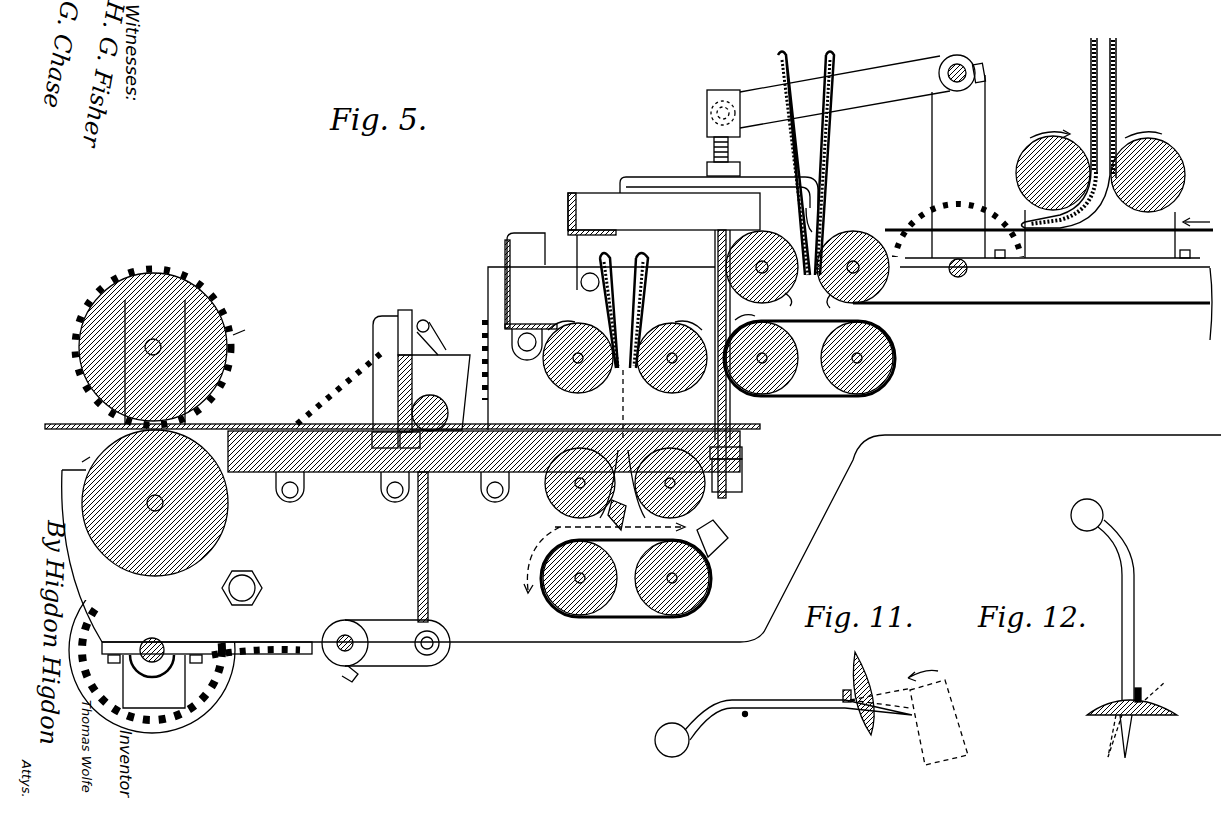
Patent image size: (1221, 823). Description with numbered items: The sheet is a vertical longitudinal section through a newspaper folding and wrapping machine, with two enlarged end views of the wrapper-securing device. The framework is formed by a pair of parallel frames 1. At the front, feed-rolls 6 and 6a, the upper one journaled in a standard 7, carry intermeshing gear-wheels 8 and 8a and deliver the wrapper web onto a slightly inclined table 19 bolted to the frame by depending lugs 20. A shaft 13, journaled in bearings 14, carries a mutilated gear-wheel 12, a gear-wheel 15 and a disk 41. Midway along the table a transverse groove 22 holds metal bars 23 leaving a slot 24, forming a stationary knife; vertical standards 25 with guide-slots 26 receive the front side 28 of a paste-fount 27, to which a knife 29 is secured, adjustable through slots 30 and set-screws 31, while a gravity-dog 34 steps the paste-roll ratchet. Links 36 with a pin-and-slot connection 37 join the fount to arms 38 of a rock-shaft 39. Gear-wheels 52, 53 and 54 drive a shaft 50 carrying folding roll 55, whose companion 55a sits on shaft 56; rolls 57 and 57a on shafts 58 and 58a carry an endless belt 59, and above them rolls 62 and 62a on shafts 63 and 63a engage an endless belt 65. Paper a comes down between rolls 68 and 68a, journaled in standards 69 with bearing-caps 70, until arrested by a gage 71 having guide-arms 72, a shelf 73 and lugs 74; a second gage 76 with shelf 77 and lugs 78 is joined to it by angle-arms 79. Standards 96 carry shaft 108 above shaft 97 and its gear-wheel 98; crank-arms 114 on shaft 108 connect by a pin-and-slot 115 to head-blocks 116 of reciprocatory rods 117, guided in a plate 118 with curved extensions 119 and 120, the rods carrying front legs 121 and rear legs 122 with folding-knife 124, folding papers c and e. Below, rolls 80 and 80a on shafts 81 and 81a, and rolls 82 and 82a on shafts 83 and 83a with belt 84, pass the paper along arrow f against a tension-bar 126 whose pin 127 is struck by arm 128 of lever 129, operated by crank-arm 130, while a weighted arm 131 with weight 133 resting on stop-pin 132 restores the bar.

In FIG. 5, the parallel frames 1 is at (641, 364).
In FIG. 5, the feed-roll 6 is at (153, 347).
In FIG. 5, the feed-roll 6a is at (155, 503).
In FIG. 5, the standard 7 is at (155, 362).
In FIG. 5, the gear-wheel 8 is at (246, 338).
In FIG. 5, the gear-wheel 8a is at (76, 451).
In FIG. 5, the mutilated gear-wheel 12 is at (430, 413).
In FIG. 5, the shaft 13 is at (154, 640).
In FIG. 5, the bearings 14 is at (155, 681).
In FIG. 5, the gear-wheel 15 is at (200, 700).
In FIG. 5, the inclined plane or table 19 is at (402, 448).
In FIG. 5, the depending lugs 20 is at (490, 512).
In FIG. 5, the transverse groove 22 is at (378, 438).
In FIG. 5, the metal bars 23 is at (408, 448).
In FIG. 5, the slot 24 is at (392, 498).
In FIG. 5, the vertical standards 25 is at (380, 316).
In FIG. 5, the vertical guide-slots 26 is at (405, 330).
In FIG. 5, the paste-fount 27 is at (441, 392).
In FIG. 5, the front side of paste-fount 28 is at (398, 365).
In FIG. 5, the knife 29 is at (398, 372).
In FIG. 5, the slots 30 is at (398, 414).
In FIG. 5, the set-screws 31 is at (398, 393).
In FIG. 5, the gravity-dog 34 is at (438, 336).
In FIG. 5, the links 36 is at (428, 548).
In FIG. 5, the pin-and-slot connection 37 is at (425, 655).
In FIG. 5, the arms 38 is at (397, 643).
In FIG. 5, the rock-shaft 39 is at (343, 652).
In FIG. 5, the disk 41 is at (200, 710).
In FIG. 5, the shaft 50 is at (579, 371).
In FIG. 5, the gear-wheel 52 is at (252, 660).
In FIG. 5, the gear-wheel 53 is at (334, 387).
In FIG. 5, the gear-wheel 54 is at (473, 348).
In FIG. 5, the paper-folding roll 55 is at (578, 357).
In FIG. 5, the paper-folding roll 55a is at (672, 357).
In FIG. 5, the shaft 56 is at (673, 371).
In FIG. 5, the roll 57 is at (762, 354).
In FIG. 5, the roll 57a is at (857, 358).
In FIG. 5, the shaft 58 is at (759, 371).
In FIG. 5, the shaft 58a is at (857, 371).
In FIG. 5, the endless belt or apron 59 is at (793, 397).
In FIG. 5, the folding roll 62 is at (762, 265).
In FIG. 5, the folding roll 62a is at (853, 265).
In FIG. 5, the shaft 63 is at (761, 278).
In FIG. 5, the shaft 63a is at (852, 278).
In FIG. 5, the endless belt or apron 65 is at (1096, 233).
In FIG. 5, the folding roll 68 is at (1053, 172).
In FIG. 5, the folding roll 68a is at (1148, 172).
In FIG. 5, the standards 69 is at (1075, 199).
In FIG. 5, the bearing-caps 70 is at (1055, 126).
In FIG. 5, the gage 71 is at (568, 198).
In FIG. 5, the longitudinal guide-arms 72 is at (664, 211).
In FIG. 5, the shelf 73 is at (585, 235).
In FIG. 5, the depending lugs 74 is at (580, 280).
In FIG. 5, the second gage 76 is at (510, 292).
In FIG. 5, the horizontal shelf 77 is at (545, 324).
In FIG. 5, the depending lugs 78 is at (526, 352).
In FIG. 5, the angle-arms 79 is at (512, 233).
In FIG. 5, the roll 80 is at (580, 483).
In FIG. 5, the roll 80a is at (670, 483).
In FIG. 5, the shaft 81 is at (577, 496).
In FIG. 5, the shaft 81a is at (670, 496).
In FIG. 5, the roll 82 is at (580, 578).
In FIG. 5, the roll 82a is at (705, 575).
In FIG. 5, the shaft 83 is at (575, 589).
In FIG. 5, the shaft 83a is at (700, 595).
In FIG. 5, the endless belt or apron 84 is at (626, 590).
In FIG. 5, the standards 96 is at (954, 140).
In FIG. 5, the shaft 97 is at (964, 272).
In FIG. 5, the gear-wheel 98 is at (920, 210).
In FIG. 5, the shaft 108 is at (960, 64).
In FIG. 5, the crank-arms 114 is at (845, 92).
In FIG. 5, the pin-and-slot connection 115 is at (707, 102).
In FIG. 5, the head-blocks 116 is at (707, 125).
In FIG. 5, the vertically-reciprocatory rods 117 is at (718, 293).
In FIG. 5, the horizontal guide-plate 118 is at (742, 452).
In FIG. 5, the curved extension 119 is at (648, 442).
In FIG. 5, the curved extension 120 is at (605, 440).
In FIG. 5, the front legs 121 is at (620, 180).
In FIG. 5, the rear legs 122 is at (818, 190).
In FIG. 5, the folding-knife 124 is at (812, 220).
In FIG. 5, the tension-bar 126 is at (622, 483).
In FIG. 11, the tension-bar 126 is at (856, 662).
In FIG. 12, the tension-bar 126 is at (1100, 705).
In FIG. 11, the pin 127 is at (850, 690).
In FIG. 12, the pin 127 is at (1171, 685).
In FIG. 5, the arm 128 is at (604, 554).
In FIG. 11, the arm 128 is at (843, 694).
In FIG. 12, the arm 128 is at (1140, 688).
In FIG. 5, the lever 129 is at (622, 532).
In FIG. 11, the lever 129 is at (900, 720).
In FIG. 12, the lever 129 is at (1128, 748).
In FIG. 5, the crank-arm 130 is at (728, 540).
In FIG. 11, the crank-arm 130 is at (938, 717).
In FIG. 11, the arm 131 is at (765, 720).
In FIG. 12, the arm 131 is at (1133, 610).
In FIG. 11, the stop-pin 132 is at (742, 720).
In FIG. 11, the weight 133 is at (672, 740).
In FIG. 12, the weight 133 is at (1087, 515).
In FIG. 5, the paper a is at (1116, 62).
In FIG. 5, the paper c is at (811, 164).
In FIG. 5, the paper e is at (629, 310).
In FIG. 5, the arrow f is at (692, 527).